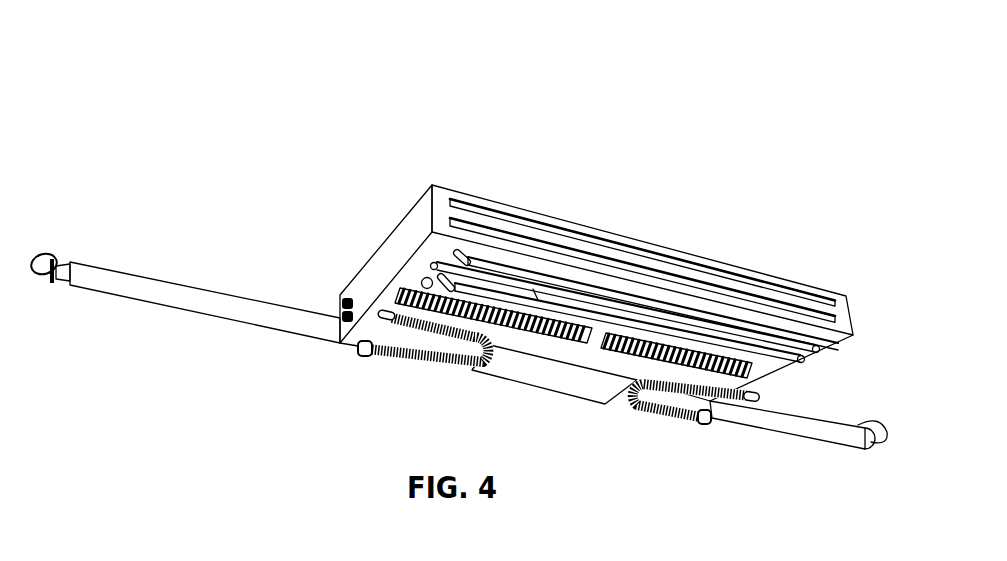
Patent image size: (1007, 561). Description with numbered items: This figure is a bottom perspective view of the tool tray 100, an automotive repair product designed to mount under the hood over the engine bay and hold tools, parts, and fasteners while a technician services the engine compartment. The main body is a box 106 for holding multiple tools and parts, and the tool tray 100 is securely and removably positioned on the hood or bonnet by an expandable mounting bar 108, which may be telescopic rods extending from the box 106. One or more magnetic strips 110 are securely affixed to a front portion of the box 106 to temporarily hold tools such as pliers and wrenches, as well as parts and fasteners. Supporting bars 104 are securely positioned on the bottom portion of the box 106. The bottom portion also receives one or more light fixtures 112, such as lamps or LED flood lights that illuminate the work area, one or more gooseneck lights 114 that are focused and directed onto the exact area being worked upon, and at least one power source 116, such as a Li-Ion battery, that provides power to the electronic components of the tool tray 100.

The tool tray 100 is at (147, 75).
The supporting bars 104 is at (733, 337).
The box 106 is at (653, 246).
The expandable mounting bar 108 is at (173, 292).
The magnetic strips 110 is at (552, 247).
The light fixtures 112 is at (383, 297).
The gooseneck lights 114 is at (401, 364).
The power source 116 is at (555, 380).